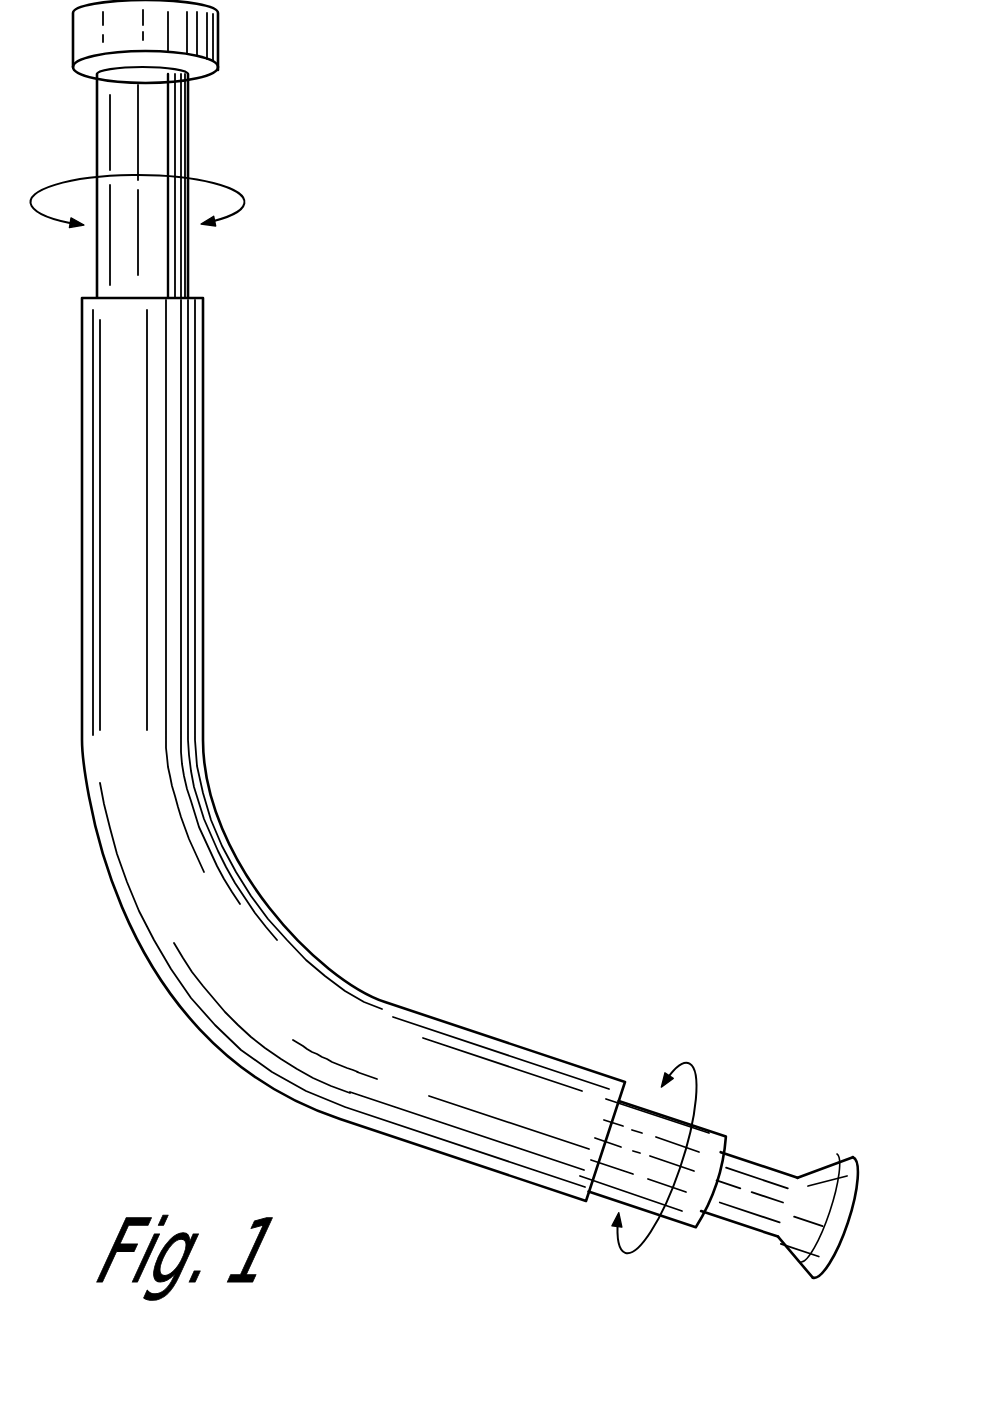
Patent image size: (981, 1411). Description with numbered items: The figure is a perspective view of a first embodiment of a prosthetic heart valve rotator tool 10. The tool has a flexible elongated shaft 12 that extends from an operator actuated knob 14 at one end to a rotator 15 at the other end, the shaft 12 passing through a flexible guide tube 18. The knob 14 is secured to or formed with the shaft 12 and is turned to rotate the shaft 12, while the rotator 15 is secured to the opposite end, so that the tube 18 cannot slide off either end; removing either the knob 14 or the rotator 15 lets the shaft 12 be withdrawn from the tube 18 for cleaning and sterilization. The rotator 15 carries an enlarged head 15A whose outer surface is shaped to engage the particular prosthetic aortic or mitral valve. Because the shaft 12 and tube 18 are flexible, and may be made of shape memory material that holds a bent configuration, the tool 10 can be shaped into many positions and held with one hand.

The prosthetic heart valve rotator tool 10 is at (458, 639).
The flexible elongated shaft 12 is at (187, 267).
The knob 14 is at (215, 43).
The rotator 15 is at (750, 1157).
The rotator head 15A is at (832, 1166).
The flexible guide tube 18 is at (205, 577).